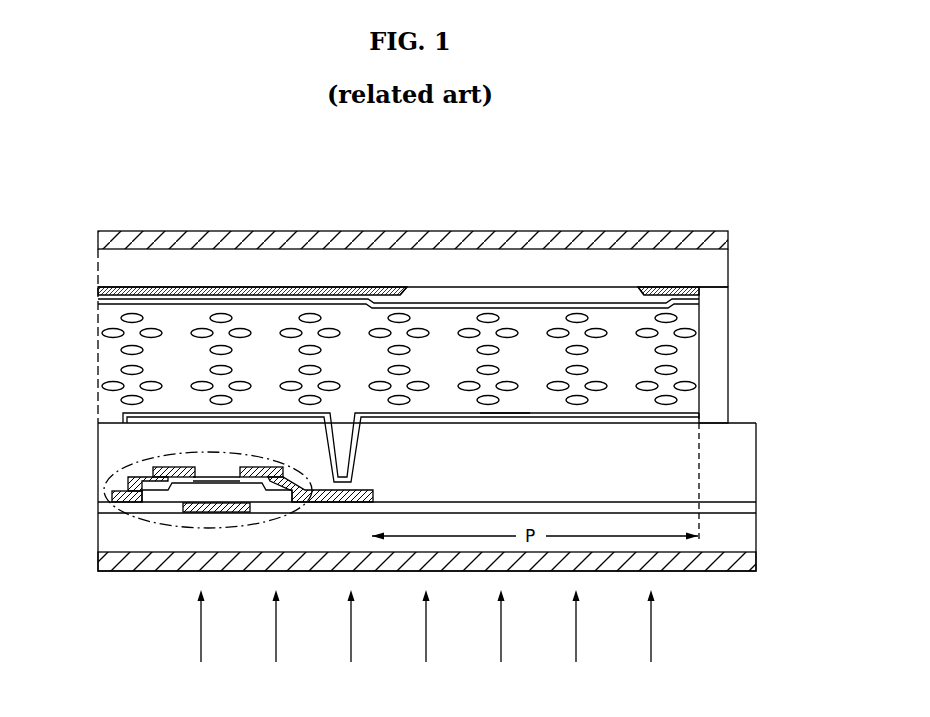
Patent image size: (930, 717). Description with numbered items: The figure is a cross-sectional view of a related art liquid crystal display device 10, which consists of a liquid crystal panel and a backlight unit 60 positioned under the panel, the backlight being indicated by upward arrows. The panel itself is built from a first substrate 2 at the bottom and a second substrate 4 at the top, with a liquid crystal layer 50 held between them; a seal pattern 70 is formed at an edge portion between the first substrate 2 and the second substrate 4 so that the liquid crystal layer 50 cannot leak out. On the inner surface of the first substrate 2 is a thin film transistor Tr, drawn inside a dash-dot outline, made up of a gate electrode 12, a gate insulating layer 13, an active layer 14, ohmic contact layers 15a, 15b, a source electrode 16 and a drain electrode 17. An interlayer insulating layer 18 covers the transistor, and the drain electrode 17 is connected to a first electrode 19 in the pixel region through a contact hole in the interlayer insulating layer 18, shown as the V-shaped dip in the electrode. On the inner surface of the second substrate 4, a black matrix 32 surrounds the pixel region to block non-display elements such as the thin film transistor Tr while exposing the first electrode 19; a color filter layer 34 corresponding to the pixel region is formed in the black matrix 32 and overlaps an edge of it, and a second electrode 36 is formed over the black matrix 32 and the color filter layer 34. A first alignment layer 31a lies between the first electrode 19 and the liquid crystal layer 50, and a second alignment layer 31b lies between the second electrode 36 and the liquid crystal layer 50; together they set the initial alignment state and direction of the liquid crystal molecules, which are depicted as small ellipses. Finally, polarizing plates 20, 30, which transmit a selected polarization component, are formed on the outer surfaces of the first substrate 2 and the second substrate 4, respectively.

The liquid crystal display device 10 is at (660, 207).
The polarizing plate 30 is at (541, 231).
The second substrate 4 is at (710, 268).
The seal pattern 70 is at (716, 355).
The black matrix 32 is at (97, 289).
The color filter layer 34 is at (446, 298).
The second electrode 36 is at (97, 300).
The second alignment layer 31b is at (688, 305).
The liquid crystal layer 50 is at (110, 358).
The first alignment layer 31a is at (690, 410).
The first electrode 19 is at (503, 420).
The interlayer insulating layer 18 is at (110, 458).
The first substrate 2 is at (742, 533).
The polarizing plate 20 is at (742, 561).
The gate electrode 12 is at (212, 511).
The gate insulating layer 13 is at (270, 510).
The active layer 14 is at (148, 496).
The source electrode 16 is at (160, 476).
The ohmic contact layer 15a is at (185, 467).
The ohmic contact layer 15b is at (243, 467).
The drain electrode 17 is at (333, 502).
The thin film transistor Tr is at (163, 528).
The backlight unit 60 is at (426, 642).